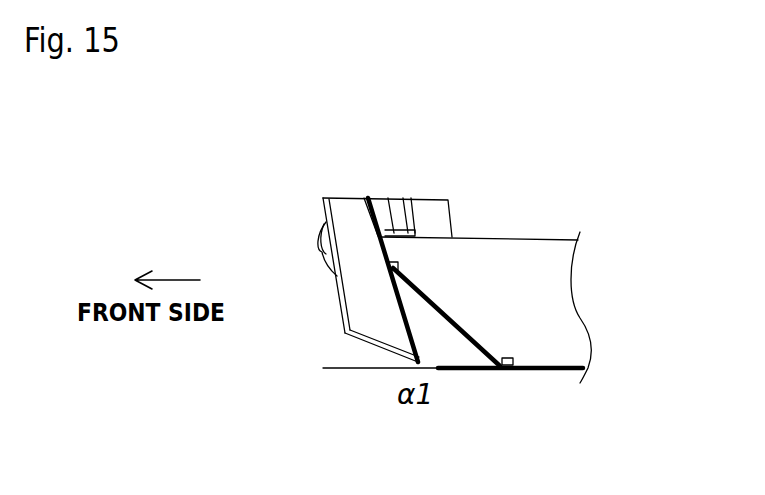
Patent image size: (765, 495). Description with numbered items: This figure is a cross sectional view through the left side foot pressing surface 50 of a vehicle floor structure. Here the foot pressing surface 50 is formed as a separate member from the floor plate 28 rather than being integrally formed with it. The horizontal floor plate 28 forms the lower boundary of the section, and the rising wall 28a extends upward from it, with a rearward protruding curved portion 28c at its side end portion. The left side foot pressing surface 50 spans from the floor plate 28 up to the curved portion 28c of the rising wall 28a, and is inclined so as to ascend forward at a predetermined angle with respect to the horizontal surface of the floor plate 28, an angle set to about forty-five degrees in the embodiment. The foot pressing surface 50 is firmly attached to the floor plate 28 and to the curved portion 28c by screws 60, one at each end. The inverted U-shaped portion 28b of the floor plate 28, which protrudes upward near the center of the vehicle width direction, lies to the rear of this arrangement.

The floor plate 28 is at (552, 376).
The rising wall 28a is at (327, 243).
The inverted U-shaped portion 28b is at (543, 240).
The curved portion 28c is at (398, 308).
The left side foot pressing surface 50 is at (450, 328).
The screw 60 is at (398, 266).